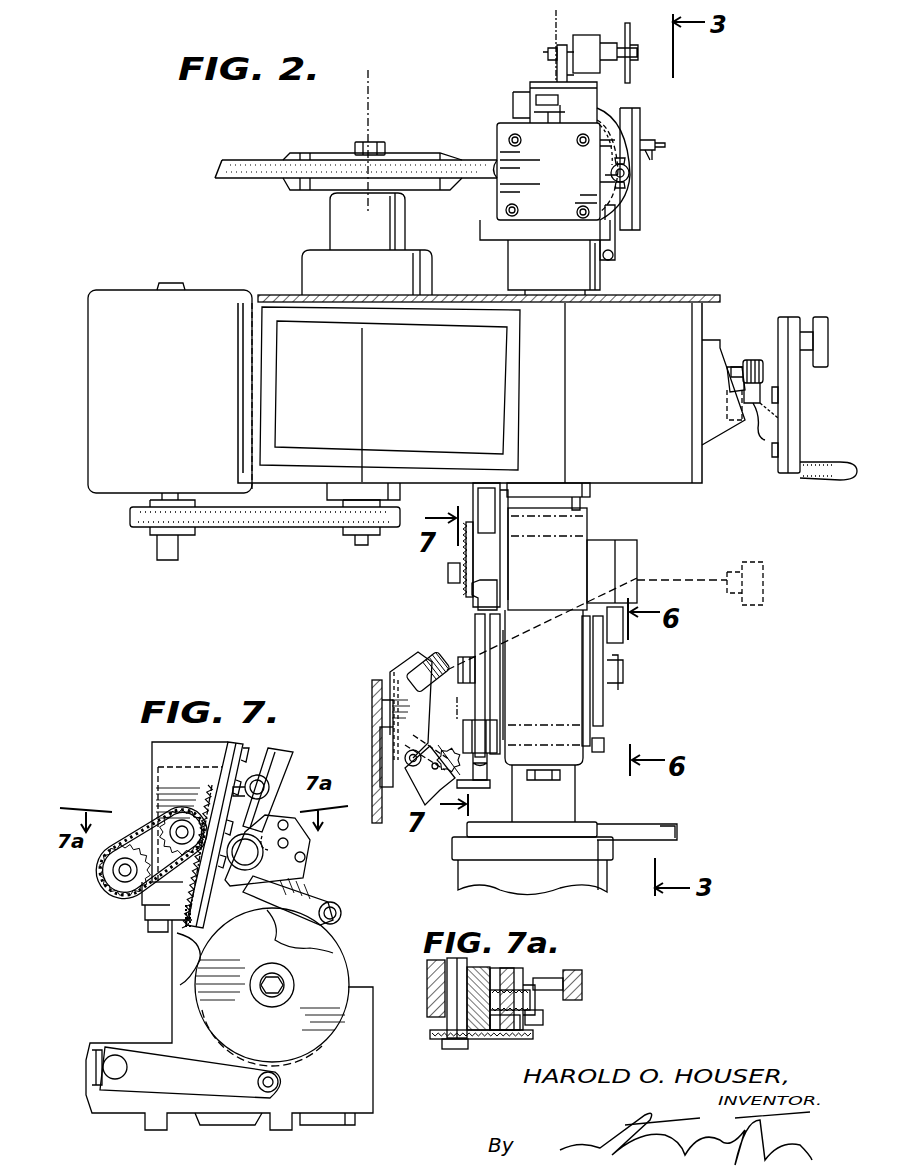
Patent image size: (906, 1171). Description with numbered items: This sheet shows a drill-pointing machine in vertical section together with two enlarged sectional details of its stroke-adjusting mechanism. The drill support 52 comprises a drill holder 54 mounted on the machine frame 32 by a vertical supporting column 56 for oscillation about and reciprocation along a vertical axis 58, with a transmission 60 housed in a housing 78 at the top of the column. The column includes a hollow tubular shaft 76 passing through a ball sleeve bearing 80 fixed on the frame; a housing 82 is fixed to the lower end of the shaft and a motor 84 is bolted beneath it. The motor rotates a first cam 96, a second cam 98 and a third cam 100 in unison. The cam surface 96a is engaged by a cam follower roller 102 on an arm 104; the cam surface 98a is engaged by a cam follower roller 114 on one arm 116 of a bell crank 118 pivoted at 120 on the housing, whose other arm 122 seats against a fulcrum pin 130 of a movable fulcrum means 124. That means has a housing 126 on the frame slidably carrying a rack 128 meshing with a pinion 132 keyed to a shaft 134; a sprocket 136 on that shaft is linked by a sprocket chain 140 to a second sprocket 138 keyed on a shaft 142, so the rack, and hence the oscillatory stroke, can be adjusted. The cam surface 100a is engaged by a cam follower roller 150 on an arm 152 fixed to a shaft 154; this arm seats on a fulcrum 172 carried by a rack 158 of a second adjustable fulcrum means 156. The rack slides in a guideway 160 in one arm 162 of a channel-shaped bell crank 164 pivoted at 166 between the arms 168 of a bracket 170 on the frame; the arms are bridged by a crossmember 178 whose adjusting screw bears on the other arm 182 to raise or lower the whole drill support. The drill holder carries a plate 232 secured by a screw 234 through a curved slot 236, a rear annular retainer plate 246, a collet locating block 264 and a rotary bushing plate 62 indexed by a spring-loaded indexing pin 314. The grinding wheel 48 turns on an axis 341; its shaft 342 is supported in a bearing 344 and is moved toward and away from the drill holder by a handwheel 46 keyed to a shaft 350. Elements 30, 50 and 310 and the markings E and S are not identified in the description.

In FIG. 2, the grinding attachment 30 is at (700, 194).
In FIG. 2, the machine frame 32 is at (729, 306).
In FIG. 7, the machine frame 32 is at (140, 750).
In FIG. 7a, the machine frame 32 is at (427, 990).
In FIG. 2, the handwheel 46 is at (795, 422).
In FIG. 2, the grinding wheel 48 is at (262, 158).
In FIG. 2, the adjusting knob 50 is at (740, 356).
In FIG. 2, the drill support 52 is at (632, 132).
In FIG. 2, the drill holder 54 is at (630, 110).
In FIG. 2, the vertical supporting column 56 is at (605, 280).
In FIG. 2, the vertical axis 58 is at (540, 96).
In FIG. 2, the transmission 60 is at (566, 186).
In FIG. 2, the bushing plate 62 is at (565, 46).
In FIG. 2, the tubular shaft 76 is at (580, 505).
In FIG. 2, the transmission housing 78 is at (520, 265).
In FIG. 2, the ball sleeve bearing 80 is at (590, 488).
In FIG. 2, the drill support housing 82 is at (556, 585).
In FIG. 7, the drill support housing 82 is at (168, 1023).
In FIG. 2, the motor 84 is at (550, 886).
In FIG. 2, the first cam 96 is at (610, 652).
In FIG. 2, the peripheral cam surface 96a is at (604, 712).
In FIG. 2, the second cam 98 is at (483, 626).
In FIG. 7, the second cam 98 is at (332, 945).
In FIG. 2, the peripheral cam surface 98a is at (500, 673).
In FIG. 7, the peripheral cam surface 98a is at (178, 935).
In FIG. 2, the third cam 100 is at (478, 632).
In FIG. 7, the third cam 100 is at (340, 972).
In FIG. 2, the peripheral cam surface 100a is at (476, 640).
In FIG. 7, the peripheral cam surface 100a is at (308, 1053).
In FIG. 2, the cam follower roller 102 is at (624, 640).
In FIG. 2, the arm 104 is at (542, 624).
In FIG. 7, the cam follower roller 114 is at (342, 912).
In FIG. 2, the bell crank arm 116 is at (497, 600).
In FIG. 7, the bell crank arm 116 is at (330, 890).
In FIG. 7, the bell crank 118 is at (293, 764).
In FIG. 7a, the bell crank 118 is at (590, 982).
In FIG. 7, the pivot 120 is at (244, 871).
In FIG. 2, the bell crank arm 122 is at (475, 489).
In FIG. 7, the bell crank arm 122 is at (280, 755).
In FIG. 7a, the bell crank arm 122 is at (583, 970).
In FIG. 2, the movable fulcrum means 124 is at (470, 502).
In FIG. 7, the movable fulcrum means 124 is at (153, 772).
In FIG. 7a, the movable fulcrum means 124 is at (440, 1005).
In FIG. 7, the fulcrum housing 126 is at (200, 748).
In FIG. 7a, the fulcrum housing 126 is at (500, 972).
In FIG. 7, the rack 128 is at (182, 915).
In FIG. 7a, the rack 128 is at (535, 1005).
In FIG. 2, the fulcrum pin 130 is at (490, 555).
In FIG. 7, the fulcrum pin 130 is at (257, 775).
In FIG. 7a, the fulcrum pin 130 is at (560, 977).
In FIG. 7a, the pinion 132 is at (505, 1032).
In FIG. 7, the shaft 134 is at (165, 905).
In FIG. 7a, the shaft 134 is at (512, 968).
In FIG. 7, the sprocket 136 is at (186, 820).
In FIG. 7a, the sprocket 136 is at (512, 1032).
In FIG. 7, the second sprocket 138 is at (130, 890).
In FIG. 7a, the second sprocket 138 is at (478, 1040).
In FIG. 2, the sprocket chain 140 is at (462, 590).
In FIG. 7, the sprocket chain 140 is at (132, 835).
In FIG. 7a, the sprocket chain 140 is at (440, 1044).
In FIG. 2, the shaft 142 is at (448, 571).
In FIG. 7, the shaft 142 is at (118, 872).
In FIG. 7a, the shaft 142 is at (455, 972).
In FIG. 2, the cam follower roller 150 is at (490, 745).
In FIG. 7, the cam follower roller 150 is at (281, 1085).
In FIG. 2, the cam follower arm 152 is at (478, 705).
In FIG. 7, the cam follower arm 152 is at (243, 1085).
In FIG. 2, the shaft 154 is at (557, 730).
In FIG. 7, the shaft 154 is at (116, 1080).
In FIG. 2, the second adjustable fulcrum means 156 is at (402, 790).
In FIG. 2, the rack 158 is at (452, 780).
In FIG. 2, the guideway 160 is at (483, 790).
In FIG. 2, the bell crank arm 162 is at (490, 785).
In FIG. 2, the bell crank member 164 is at (425, 795).
In FIG. 2, the pivot 166 is at (405, 758).
In FIG. 2, the bracket arms 168 is at (380, 735).
In FIG. 2, the bracket 170 is at (392, 770).
In FIG. 2, the fulcrum pin 172 is at (490, 770).
In FIG. 2, the crossmember 178 is at (405, 655).
In FIG. 2, the bell crank arm 182 is at (385, 665).
In FIG. 2, the drill holder plate 232 is at (615, 124).
In FIG. 2, the screw 234 is at (628, 180).
In FIG. 2, the curved slot 236 is at (630, 200).
In FIG. 2, the rear annular retainer plate 246 is at (632, 235).
In FIG. 2, the collet locating block 264 is at (655, 146).
In FIG. 2, the collar 310 is at (553, 60).
In FIG. 2, the indexing pin 314 is at (640, 45).
In FIG. 2, the grinding wheel axis 341 is at (368, 126).
In FIG. 2, the grinding wheel shaft 342 is at (365, 193).
In FIG. 2, the bearing 344 is at (378, 283).
In FIG. 2, the handwheel shaft 350 is at (759, 433).
In FIG. 2, the wheel edge E is at (222, 166).
In FIG. 2, the grinding surface S is at (215, 167).